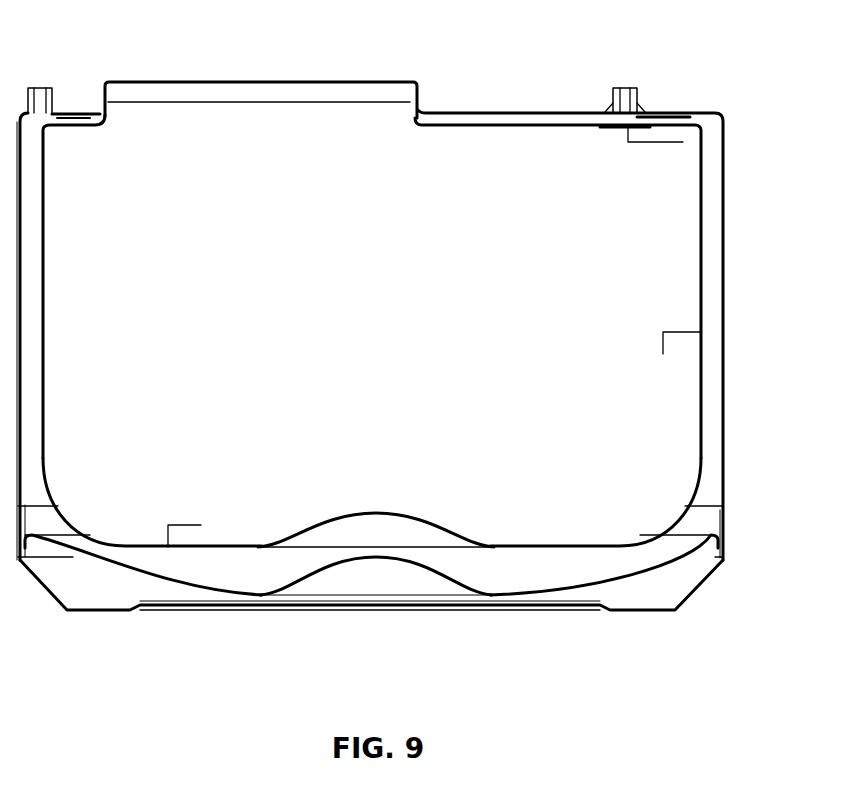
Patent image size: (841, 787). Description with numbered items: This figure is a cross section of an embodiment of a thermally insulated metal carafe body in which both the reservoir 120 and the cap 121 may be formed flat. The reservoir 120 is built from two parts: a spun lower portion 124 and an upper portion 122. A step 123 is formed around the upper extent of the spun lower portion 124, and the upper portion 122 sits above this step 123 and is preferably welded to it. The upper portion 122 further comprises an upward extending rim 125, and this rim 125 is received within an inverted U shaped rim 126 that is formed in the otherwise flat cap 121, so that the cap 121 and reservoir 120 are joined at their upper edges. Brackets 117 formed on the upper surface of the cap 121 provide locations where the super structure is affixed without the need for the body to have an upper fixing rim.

The brackets 117 is at (621, 88).
The reservoir 120 is at (201, 525).
The cap 121 is at (518, 112).
The upper portion of the reservoir 122 is at (454, 112).
The step 123 is at (683, 142).
The spun lower portion of the reservoir 124 is at (663, 354).
The upward extending rim 125 is at (125, 112).
The inverted U shaped rim 126 is at (272, 82).